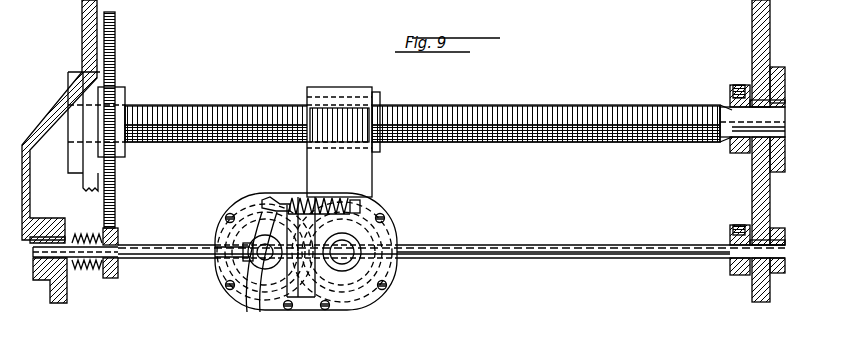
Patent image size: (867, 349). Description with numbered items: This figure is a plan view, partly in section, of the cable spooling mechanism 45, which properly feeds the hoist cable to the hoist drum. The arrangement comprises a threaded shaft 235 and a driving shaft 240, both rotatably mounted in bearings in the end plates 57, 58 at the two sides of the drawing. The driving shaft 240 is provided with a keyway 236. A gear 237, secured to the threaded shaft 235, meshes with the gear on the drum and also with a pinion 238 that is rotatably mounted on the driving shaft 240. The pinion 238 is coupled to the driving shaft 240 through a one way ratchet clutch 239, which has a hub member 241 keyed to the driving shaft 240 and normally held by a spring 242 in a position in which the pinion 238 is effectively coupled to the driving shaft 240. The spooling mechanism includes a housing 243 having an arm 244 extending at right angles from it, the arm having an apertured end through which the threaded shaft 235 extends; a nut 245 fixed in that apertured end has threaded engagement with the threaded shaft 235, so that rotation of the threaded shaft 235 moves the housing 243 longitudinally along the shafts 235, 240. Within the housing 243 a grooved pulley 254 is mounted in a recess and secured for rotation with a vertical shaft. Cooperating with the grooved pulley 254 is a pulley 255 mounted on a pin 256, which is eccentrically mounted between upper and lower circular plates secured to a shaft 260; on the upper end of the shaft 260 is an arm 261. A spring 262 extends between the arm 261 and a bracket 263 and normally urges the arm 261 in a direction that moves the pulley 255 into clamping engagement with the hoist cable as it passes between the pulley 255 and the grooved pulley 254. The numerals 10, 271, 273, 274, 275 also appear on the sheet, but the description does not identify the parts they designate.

The end plate 57 is at (82, 31).
The end plate 58 is at (752, 40).
The gear 237 is at (115, 72).
The threaded shaft 235 is at (626, 105).
The nut 245 is at (380, 93).
The arm 244 is at (373, 173).
The bracket 263 is at (372, 196).
The keyway 236 is at (546, 244).
The driving shaft 240 is at (488, 260).
The hub member 241 is at (90, 233).
The spring 242 is at (80, 278).
The pinion 238 is at (119, 239).
The one way ratchet clutch 239 is at (79, 290).
The grooved pulley 254 is at (372, 298).
The pin 256 is at (262, 306).
The housing 243 is at (310, 305).
The spring 262 is at (335, 198).
The arm 261 is at (268, 198).
The shaft 260 is at (250, 310).
The pulley 255 is at (218, 270).
The assembly 10 is at (411, 198).
The cable spooling mechanism 45 is at (620, 184).
The element 271 is at (591, 338).
The element 273 is at (636, 346).
The element 274 is at (672, 346).
The element 275 is at (708, 346).